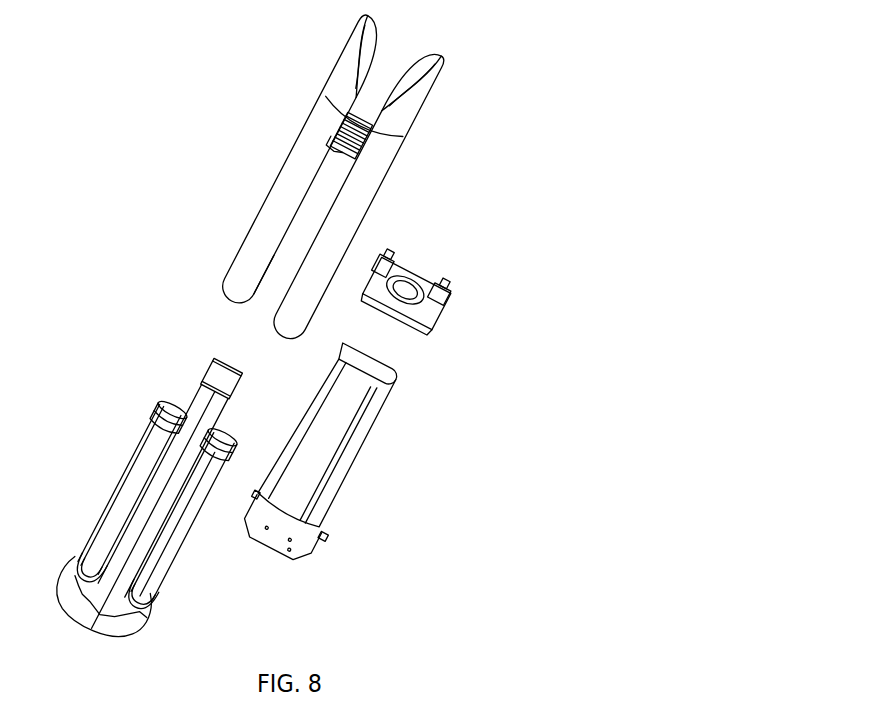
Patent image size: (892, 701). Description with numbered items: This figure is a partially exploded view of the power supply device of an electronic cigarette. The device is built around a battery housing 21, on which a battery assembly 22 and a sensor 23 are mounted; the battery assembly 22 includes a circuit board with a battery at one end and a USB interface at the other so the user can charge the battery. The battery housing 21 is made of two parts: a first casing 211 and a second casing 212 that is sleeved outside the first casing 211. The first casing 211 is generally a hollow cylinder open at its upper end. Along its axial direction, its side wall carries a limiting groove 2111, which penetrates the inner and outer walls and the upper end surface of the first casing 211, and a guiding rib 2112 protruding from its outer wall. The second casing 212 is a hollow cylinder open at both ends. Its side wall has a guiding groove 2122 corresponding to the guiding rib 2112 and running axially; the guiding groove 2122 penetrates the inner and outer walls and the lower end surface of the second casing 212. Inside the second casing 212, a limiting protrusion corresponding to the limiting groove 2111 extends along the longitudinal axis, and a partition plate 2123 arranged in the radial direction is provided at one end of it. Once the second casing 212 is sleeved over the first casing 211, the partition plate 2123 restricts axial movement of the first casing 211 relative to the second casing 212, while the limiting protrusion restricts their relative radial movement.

The battery housing 21 is at (207, 115).
The first casing 211 is at (126, 475).
The limiting groove 2111 is at (169, 402).
The guiding rib 2112 is at (210, 414).
The second casing 212 is at (284, 167).
The guiding groove 2122 is at (273, 284).
The partition plate 2123 is at (355, 152).
The battery assembly 22 is at (352, 466).
The sensor 23 is at (443, 300).